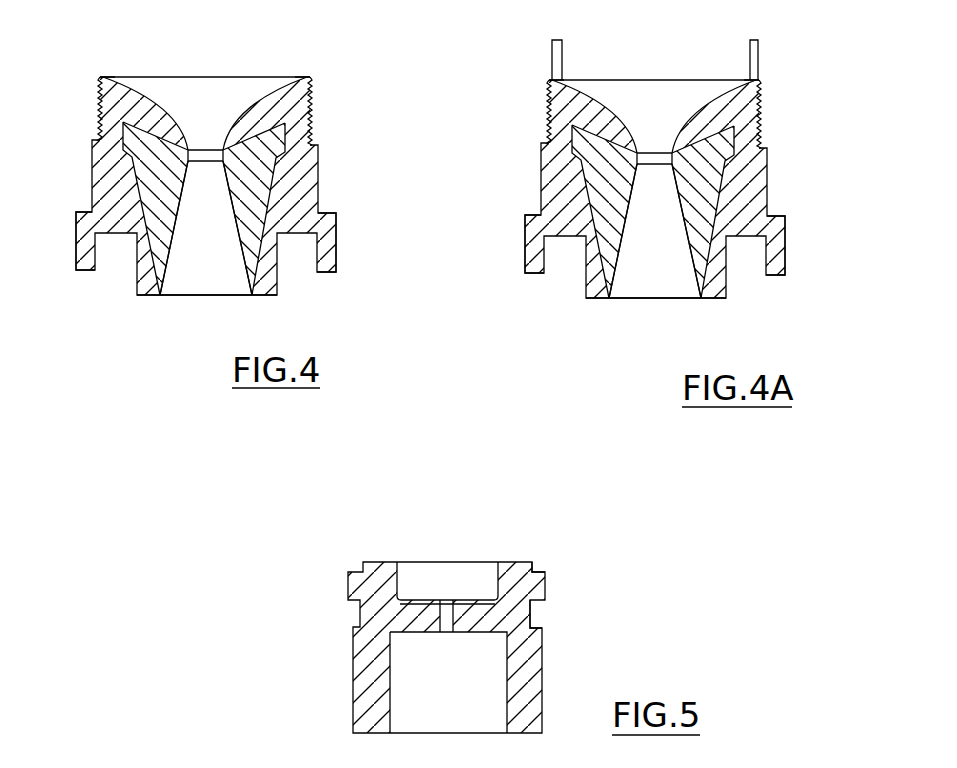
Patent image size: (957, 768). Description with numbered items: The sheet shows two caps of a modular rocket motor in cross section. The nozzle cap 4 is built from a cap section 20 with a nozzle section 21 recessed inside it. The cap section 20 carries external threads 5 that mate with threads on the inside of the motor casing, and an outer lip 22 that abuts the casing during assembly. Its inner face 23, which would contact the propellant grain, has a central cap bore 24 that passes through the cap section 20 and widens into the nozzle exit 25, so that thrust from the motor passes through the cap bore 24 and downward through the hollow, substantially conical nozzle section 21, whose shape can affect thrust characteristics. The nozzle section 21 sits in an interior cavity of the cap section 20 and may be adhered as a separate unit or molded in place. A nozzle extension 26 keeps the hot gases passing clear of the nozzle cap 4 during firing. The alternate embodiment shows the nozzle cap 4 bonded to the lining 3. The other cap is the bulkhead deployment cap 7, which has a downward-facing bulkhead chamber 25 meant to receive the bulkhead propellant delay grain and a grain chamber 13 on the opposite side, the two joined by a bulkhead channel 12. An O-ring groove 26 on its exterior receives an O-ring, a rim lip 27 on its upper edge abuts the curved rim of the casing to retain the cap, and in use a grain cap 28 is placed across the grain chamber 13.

In FIG. 4A, the lining 3 is at (550, 57).
In FIG. 4, the nozzle cap 4 is at (363, 227).
In FIG. 4A, the nozzle cap 4 is at (802, 260).
In FIG. 4, the external threads 5 is at (99, 95).
In FIG. 4A, the external threads 5 is at (548, 97).
In FIG. 5, the bulkhead deployment cap 7 is at (317, 672).
In FIG. 5, the bulkhead channel 12 is at (445, 615).
In FIG. 5, the grain chamber 13 is at (475, 575).
In FIG. 4, the cap section 20 is at (103, 150).
In FIG. 4A, the cap section 20 is at (548, 168).
In FIG. 4, the nozzle section 21 is at (181, 238).
In FIG. 4A, the nozzle section 21 is at (633, 242).
In FIG. 4, the outer lip 22 is at (74, 212).
In FIG. 4A, the outer lip 22 is at (533, 215).
In FIG. 4, the inner face 23 is at (113, 77).
In FIG. 4A, the inner face 23 is at (568, 80).
In FIG. 4, the cap bore 24 is at (203, 136).
In FIG. 4A, the cap bore 24 is at (653, 128).
In FIG. 4, the nozzle exit 25 is at (208, 244).
In FIG. 4A, the nozzle exit 25 is at (658, 250).
In FIG. 5, the nozzle exit 25 is at (463, 723).
In FIG. 4, the nozzle extension 26 is at (280, 286).
In FIG. 4A, the nozzle extension 26 is at (728, 290).
In FIG. 5, the nozzle extension 26 is at (538, 622).
In FIG. 5, the rim lip 27 is at (541, 570).
In FIG. 5, the grain cap 28 is at (413, 562).